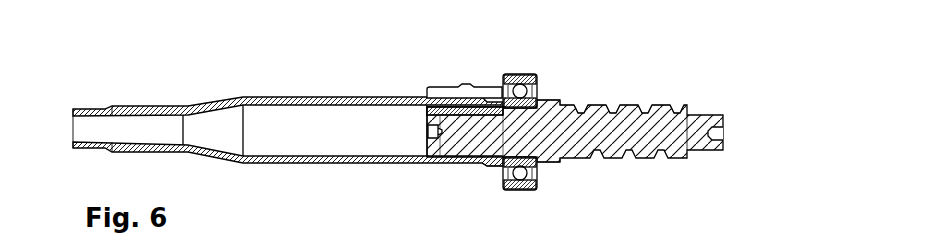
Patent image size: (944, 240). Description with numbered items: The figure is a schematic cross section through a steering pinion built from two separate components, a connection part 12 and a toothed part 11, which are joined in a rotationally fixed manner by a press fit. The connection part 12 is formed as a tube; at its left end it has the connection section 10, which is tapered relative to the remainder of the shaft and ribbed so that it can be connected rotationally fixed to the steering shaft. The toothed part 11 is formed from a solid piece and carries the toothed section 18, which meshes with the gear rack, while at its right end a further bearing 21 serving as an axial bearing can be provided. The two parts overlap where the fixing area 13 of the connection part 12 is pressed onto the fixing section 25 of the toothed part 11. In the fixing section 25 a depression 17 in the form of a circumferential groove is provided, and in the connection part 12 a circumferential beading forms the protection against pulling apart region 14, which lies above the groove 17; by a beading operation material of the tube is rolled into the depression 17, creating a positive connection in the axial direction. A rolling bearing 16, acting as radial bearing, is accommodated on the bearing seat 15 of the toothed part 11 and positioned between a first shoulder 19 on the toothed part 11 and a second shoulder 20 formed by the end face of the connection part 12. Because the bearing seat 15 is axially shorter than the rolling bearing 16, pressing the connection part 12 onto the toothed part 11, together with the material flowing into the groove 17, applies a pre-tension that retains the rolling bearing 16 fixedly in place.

The connection section 10 is at (118, 108).
The toothed part 11 is at (647, 163).
The connection part 12 is at (311, 167).
The fixing area 13 is at (465, 87).
The protection against pulling apart region 14 is at (488, 100).
The bearing seat 15 is at (533, 158).
The rolling bearing 16 is at (528, 74).
The depression 17 is at (478, 112).
The toothed section 18 is at (660, 110).
The first shoulder 19 is at (538, 99).
The second shoulder 20 is at (500, 164).
The further bearing 21 is at (707, 125).
The fixing section 25 is at (430, 132).